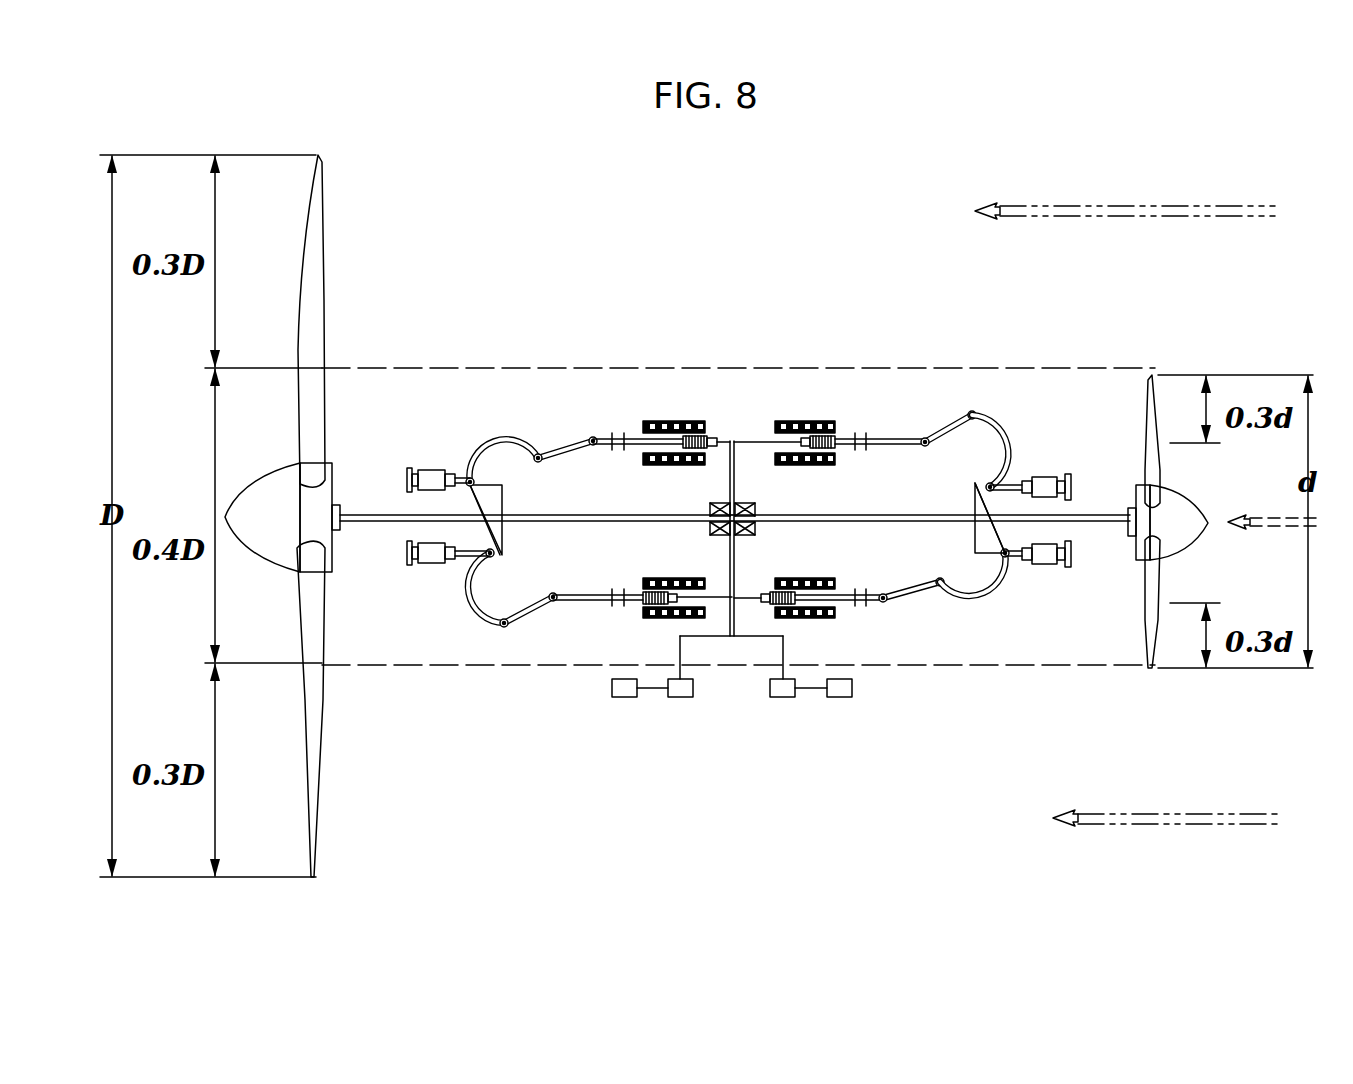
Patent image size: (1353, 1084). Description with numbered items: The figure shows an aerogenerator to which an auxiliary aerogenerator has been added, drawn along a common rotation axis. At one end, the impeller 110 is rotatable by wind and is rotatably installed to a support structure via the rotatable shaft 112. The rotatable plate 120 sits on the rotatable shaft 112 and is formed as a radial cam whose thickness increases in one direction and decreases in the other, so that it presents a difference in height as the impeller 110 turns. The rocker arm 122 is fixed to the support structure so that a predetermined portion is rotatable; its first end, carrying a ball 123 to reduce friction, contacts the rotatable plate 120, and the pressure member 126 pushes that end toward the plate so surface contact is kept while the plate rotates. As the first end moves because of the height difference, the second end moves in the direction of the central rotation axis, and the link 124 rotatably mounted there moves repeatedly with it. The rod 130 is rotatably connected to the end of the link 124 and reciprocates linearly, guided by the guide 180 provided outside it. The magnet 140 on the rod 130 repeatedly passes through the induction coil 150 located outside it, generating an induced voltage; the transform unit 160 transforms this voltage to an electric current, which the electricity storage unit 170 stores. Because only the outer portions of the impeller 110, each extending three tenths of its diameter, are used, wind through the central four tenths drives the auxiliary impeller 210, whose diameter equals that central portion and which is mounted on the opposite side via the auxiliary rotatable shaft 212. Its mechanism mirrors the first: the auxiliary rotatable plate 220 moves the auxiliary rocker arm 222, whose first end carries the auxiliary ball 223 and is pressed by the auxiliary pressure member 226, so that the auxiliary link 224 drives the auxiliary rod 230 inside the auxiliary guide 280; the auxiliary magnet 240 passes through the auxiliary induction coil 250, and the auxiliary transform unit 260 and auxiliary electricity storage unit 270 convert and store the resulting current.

The impeller 110 is at (266, 478).
The rotatable shaft 112 is at (653, 522).
The rotatable plate 120 is at (497, 535).
The rocker arm 122 is at (500, 440).
The ball 123 is at (505, 560).
The link 124 is at (560, 445).
The pressure member 126 is at (433, 475).
The rod 130 is at (600, 438).
The magnet 140 is at (707, 437).
The induction coil 150 is at (666, 420).
The transform unit 160 is at (680, 697).
The electricity storage unit 170 is at (625, 697).
The guide 180 is at (614, 447).
The auxiliary impeller 210 is at (1185, 502).
The auxiliary rotatable shaft 212 is at (803, 497).
The auxiliary rotatable plate 220 is at (978, 506).
The auxiliary rocker arm 222 is at (988, 592).
The auxiliary ball 223 is at (978, 484).
The auxiliary link 224 is at (920, 592).
The auxiliary pressure member 226 is at (1050, 566).
The auxiliary rod 230 is at (870, 600).
The auxiliary magnet 240 is at (772, 586).
The auxiliary induction coil 250 is at (825, 578).
The auxiliary transform unit 260 is at (785, 697).
The auxiliary electricity storage unit 270 is at (840, 697).
The auxiliary guide 280 is at (866, 437).